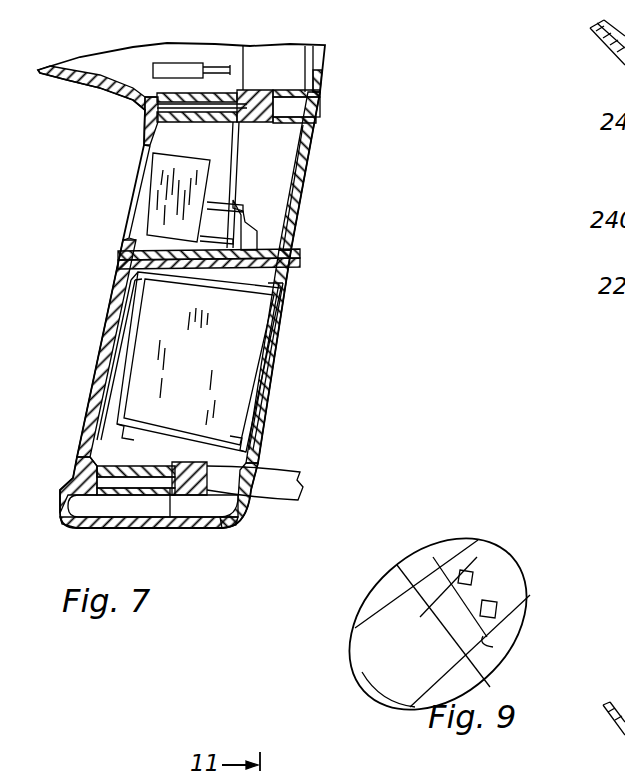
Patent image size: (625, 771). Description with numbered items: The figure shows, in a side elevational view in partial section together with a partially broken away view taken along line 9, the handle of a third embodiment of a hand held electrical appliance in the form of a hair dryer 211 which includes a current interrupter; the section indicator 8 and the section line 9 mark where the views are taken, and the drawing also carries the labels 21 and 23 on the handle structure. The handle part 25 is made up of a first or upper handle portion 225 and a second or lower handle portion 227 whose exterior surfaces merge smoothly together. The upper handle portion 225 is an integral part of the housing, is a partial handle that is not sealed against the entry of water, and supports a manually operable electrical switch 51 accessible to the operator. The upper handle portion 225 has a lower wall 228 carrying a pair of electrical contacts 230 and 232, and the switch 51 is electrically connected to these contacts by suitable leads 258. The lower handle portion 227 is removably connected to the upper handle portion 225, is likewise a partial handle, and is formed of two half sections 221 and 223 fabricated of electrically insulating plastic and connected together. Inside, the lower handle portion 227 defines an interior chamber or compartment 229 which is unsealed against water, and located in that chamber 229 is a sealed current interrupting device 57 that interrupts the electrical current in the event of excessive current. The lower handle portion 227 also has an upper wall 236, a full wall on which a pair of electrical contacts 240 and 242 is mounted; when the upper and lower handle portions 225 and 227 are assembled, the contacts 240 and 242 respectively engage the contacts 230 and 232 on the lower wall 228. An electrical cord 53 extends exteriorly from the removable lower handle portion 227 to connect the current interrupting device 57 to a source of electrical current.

In FIG. 7, the section line 8- 8 is at (242, 25).
In FIG. 7, the section line 9 is at (80, 260).
In FIG. 7, the housing shell 21 is at (147, 123).
In FIG. 9, the housing shell 21 is at (349, 618).
In FIG. 7, the upper housing section 23 is at (334, 152).
In FIG. 7, the handle part 25 is at (342, 148).
In FIG. 7, the electrical switch 51 is at (163, 165).
In FIG. 7, the electrical cord 53 is at (290, 473).
In FIG. 7, the current interrupting device 57 is at (147, 368).
In FIG. 7, the hair dryer 211 is at (100, 302).
In FIG. 7, the half section 221 is at (98, 408).
In FIG. 7, the half section 223 is at (263, 416).
In FIG. 9, the half section 223 is at (510, 560).
In FIG. 7, the upper handle portion 225 is at (283, 162).
In FIG. 7, the lower handle portion 227 is at (113, 332).
In FIG. 9, the lower handle portion 227 is at (517, 608).
In FIG. 7, the lower wall 228 is at (232, 255).
In FIG. 7, the interior chamber 229 is at (110, 452).
In FIG. 9, the interior chamber 229 is at (441, 540).
In FIG. 9, the electrical contact 230 is at (465, 565).
In FIG. 9, the electrical contact 232 is at (498, 605).
In FIG. 7, the upper wall 236 is at (284, 285).
In FIG. 9, the upper wall 236 is at (370, 652).
In FIG. 9, the electrical contact 240 is at (430, 605).
In FIG. 9, the electrical contact 242 is at (457, 638).
In FIG. 7, the leads 258 is at (253, 228).